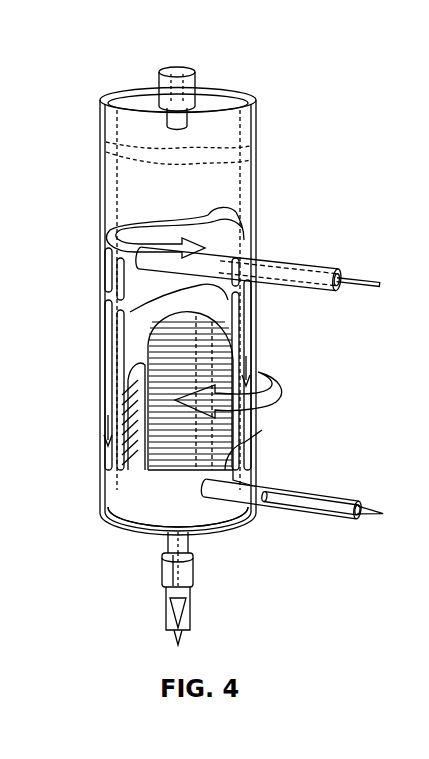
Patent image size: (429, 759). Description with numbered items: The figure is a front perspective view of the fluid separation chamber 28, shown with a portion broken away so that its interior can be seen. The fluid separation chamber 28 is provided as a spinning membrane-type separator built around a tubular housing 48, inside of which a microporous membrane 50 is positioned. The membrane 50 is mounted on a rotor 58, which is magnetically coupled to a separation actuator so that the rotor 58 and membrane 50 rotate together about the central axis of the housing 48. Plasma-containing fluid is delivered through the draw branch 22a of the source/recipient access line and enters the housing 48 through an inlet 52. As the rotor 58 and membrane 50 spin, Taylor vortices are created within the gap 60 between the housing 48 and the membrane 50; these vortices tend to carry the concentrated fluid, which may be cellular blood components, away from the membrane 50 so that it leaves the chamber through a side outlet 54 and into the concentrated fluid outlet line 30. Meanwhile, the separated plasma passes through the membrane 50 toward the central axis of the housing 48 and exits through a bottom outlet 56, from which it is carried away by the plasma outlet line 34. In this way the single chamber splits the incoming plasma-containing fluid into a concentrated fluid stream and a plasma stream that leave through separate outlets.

The fluid separation chamber 28 is at (250, 80).
The tubular housing 48 is at (100, 160).
The rotor 58 is at (256, 146).
The gap 60 is at (256, 162).
The draw branch 22a is at (266, 256).
The inlet 52 is at (128, 280).
The microporous membrane 50 is at (130, 346).
The side outlet 54 is at (288, 489).
The concentrated fluid outlet line 30 is at (330, 514).
The bottom outlet 56 is at (170, 572).
The plasma outlet line 34 is at (193, 616).